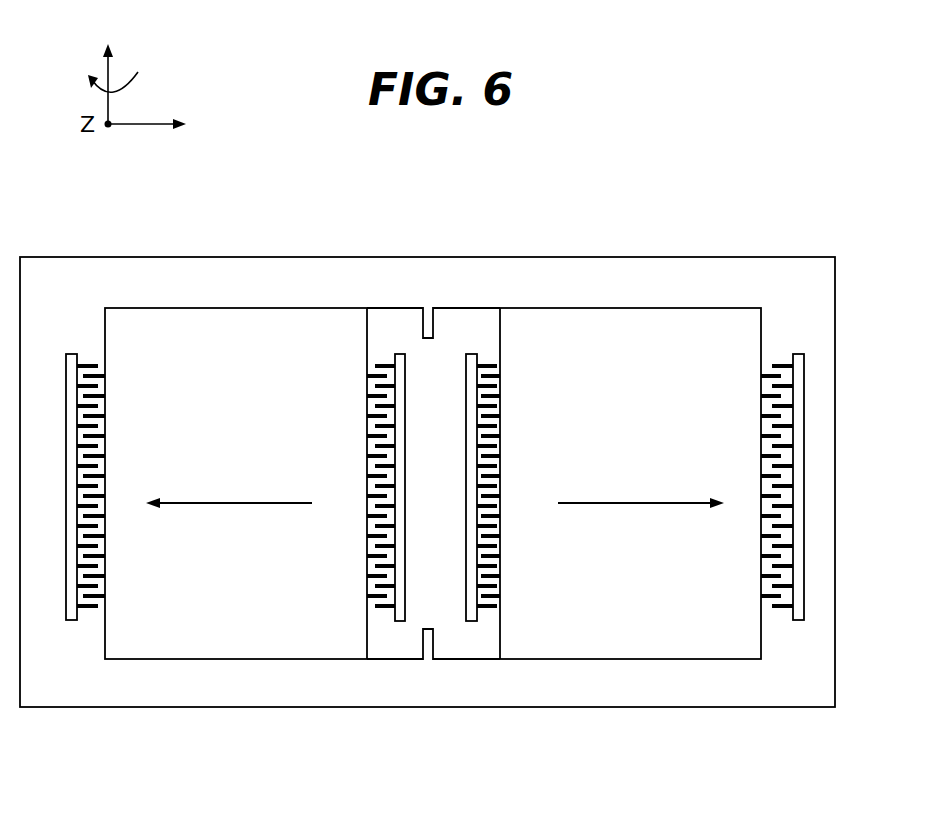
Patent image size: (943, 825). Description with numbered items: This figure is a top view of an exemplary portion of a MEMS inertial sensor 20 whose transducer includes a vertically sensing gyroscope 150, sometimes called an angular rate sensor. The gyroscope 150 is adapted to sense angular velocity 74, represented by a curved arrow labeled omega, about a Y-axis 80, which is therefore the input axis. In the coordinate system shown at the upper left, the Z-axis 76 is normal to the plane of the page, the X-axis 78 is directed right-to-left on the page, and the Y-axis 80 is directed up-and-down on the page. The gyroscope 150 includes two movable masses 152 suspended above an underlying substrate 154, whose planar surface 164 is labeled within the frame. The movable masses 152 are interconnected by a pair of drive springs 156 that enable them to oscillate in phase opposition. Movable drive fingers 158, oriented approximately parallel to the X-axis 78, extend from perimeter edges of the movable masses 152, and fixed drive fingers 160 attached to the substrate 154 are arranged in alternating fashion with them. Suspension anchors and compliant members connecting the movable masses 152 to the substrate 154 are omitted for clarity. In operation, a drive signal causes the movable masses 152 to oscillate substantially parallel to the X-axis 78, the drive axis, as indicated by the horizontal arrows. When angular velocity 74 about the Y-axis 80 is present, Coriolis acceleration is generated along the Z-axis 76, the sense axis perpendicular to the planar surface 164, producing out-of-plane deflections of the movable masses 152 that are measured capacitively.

The MEMS inertial sensor 20 is at (368, 782).
The angular velocity 74 is at (157, 97).
The Z-axis 76 is at (108, 130).
The X-axis 78 is at (150, 127).
The Y-axis 80 is at (110, 72).
The vertically sensing gyroscope 150 is at (638, 182).
The movable masses 152 is at (212, 340).
The substrate 154 is at (28, 703).
The drive springs 156 is at (443, 308).
The movable drive fingers 158 is at (100, 598).
The fixed drive fingers 160 is at (88, 363).
The planar surface 164 is at (73, 301).